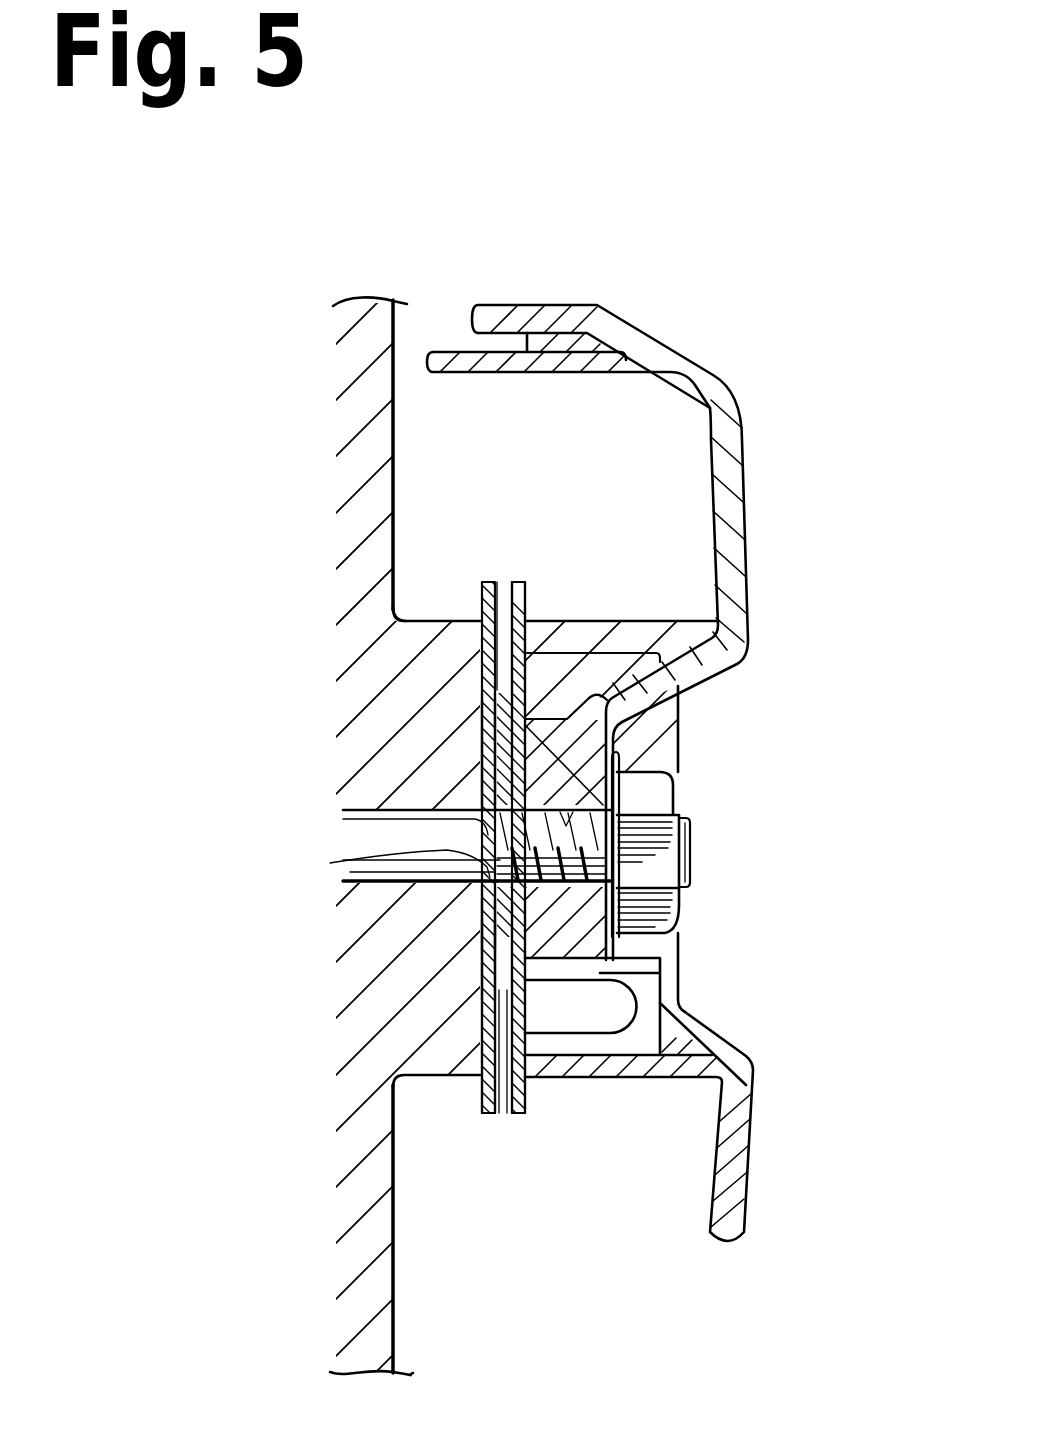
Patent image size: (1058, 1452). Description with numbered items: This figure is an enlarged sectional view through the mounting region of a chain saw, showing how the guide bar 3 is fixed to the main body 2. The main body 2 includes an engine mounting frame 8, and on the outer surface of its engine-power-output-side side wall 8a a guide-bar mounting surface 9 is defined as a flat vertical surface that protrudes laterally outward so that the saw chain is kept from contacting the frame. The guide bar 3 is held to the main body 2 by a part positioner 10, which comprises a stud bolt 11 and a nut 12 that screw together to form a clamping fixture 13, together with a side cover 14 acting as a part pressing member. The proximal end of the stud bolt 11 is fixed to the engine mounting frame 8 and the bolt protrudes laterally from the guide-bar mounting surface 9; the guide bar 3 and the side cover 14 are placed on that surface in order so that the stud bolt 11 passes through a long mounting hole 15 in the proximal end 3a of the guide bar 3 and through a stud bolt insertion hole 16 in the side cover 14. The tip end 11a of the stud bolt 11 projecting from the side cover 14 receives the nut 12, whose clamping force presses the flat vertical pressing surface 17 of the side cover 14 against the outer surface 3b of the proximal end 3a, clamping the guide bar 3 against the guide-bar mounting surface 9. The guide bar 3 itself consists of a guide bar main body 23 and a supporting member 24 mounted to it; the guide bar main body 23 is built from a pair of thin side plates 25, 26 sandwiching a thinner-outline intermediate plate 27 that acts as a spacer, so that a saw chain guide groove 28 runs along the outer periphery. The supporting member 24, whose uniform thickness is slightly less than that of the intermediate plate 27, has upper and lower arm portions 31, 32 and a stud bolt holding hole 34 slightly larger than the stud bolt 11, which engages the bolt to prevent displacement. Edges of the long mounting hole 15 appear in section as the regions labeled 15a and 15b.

The main body 2 is at (410, 322).
The guide bar 3 is at (427, 1218).
The proximal end of guide bar 3a is at (477, 752).
The outer surface of guide bar 3b is at (586, 738).
The engine mounting frame 8 is at (407, 432).
The side wall of engine mounting frame 8a is at (397, 490).
The guide-bar mounting surface 9 is at (530, 694).
The part positioner 10 is at (757, 787).
The stud bolt 11 is at (692, 851).
The tip end of stud bolt 11a is at (692, 828).
The nut 12 is at (680, 912).
The clamping fixture 13 is at (790, 833).
The side cover 14 is at (763, 624).
The long mounting hole 15 is at (485, 824).
The upper arm of clip 15a is at (482, 822).
The lower arm of clip 15b is at (465, 852).
The stud bolt insertion hole 16 is at (682, 729).
The pressing surface 17 is at (479, 938).
The guide bar main body 23 is at (523, 552).
The supporting member 24 is at (538, 913).
The side plate 25 is at (486, 1114).
The side plate 26 is at (511, 1114).
The intermediate plate 27 is at (502, 1114).
The saw chain guide groove 28 is at (505, 602).
The upper arm portion 31 is at (471, 778).
The lower arm portion 32 is at (470, 917).
The stud bolt holding hole 34 is at (618, 818).